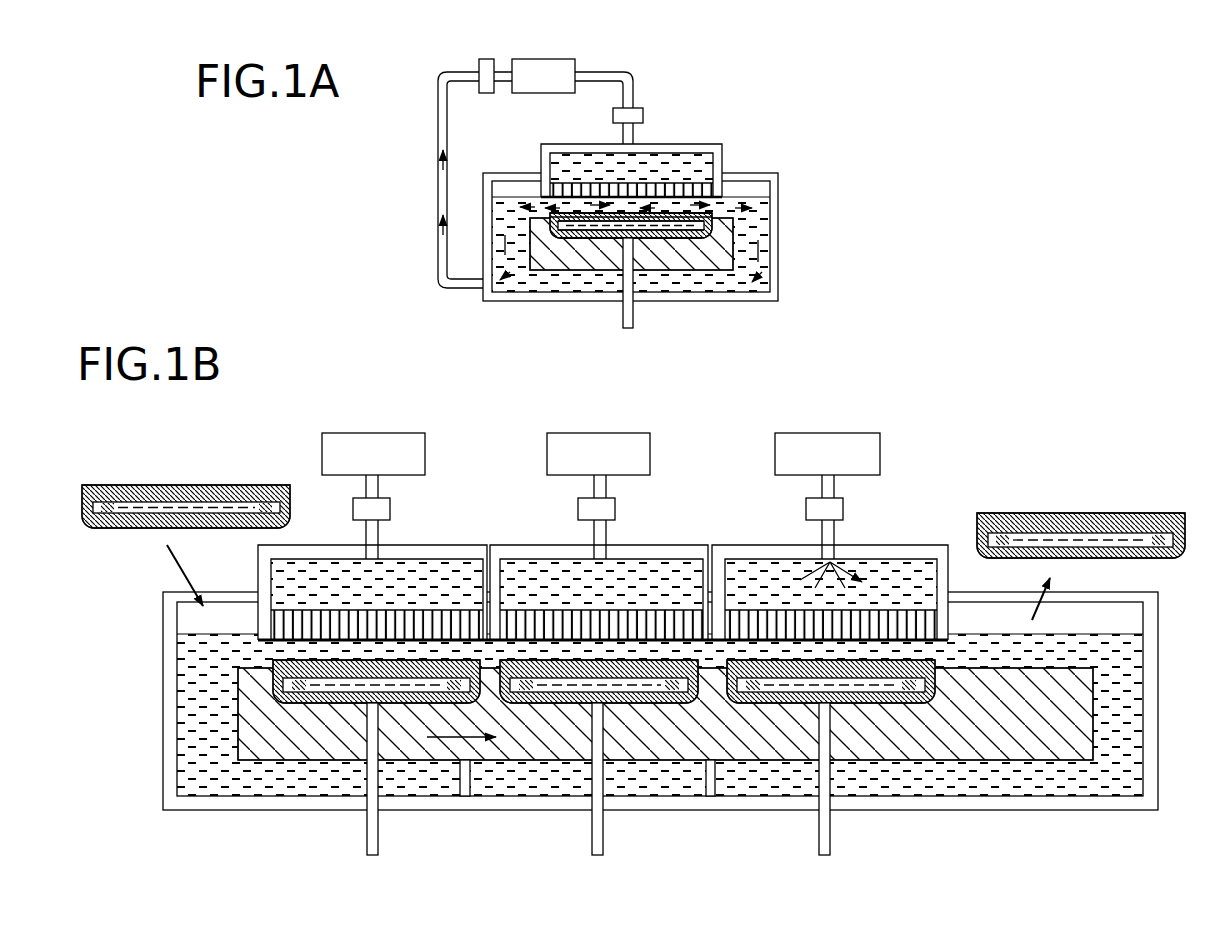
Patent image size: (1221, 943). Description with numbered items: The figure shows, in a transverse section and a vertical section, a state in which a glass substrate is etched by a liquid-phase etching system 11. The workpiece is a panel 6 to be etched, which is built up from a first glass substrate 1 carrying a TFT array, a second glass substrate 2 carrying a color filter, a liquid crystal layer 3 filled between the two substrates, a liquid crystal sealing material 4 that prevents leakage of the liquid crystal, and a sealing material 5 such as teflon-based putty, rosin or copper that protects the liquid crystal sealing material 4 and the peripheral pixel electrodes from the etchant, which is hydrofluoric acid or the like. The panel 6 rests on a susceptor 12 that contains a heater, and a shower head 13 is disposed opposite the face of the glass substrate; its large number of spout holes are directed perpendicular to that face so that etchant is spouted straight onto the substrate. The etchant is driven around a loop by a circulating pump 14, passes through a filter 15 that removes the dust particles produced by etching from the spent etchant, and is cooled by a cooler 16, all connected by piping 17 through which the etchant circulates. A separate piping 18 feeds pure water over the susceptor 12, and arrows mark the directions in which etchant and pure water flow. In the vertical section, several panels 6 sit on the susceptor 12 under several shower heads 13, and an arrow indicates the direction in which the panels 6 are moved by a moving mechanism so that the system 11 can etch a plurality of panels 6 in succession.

In FIG. 1A, the first glass substrate 1 is at (638, 238).
In FIG. 1A, the second glass substrate 2 is at (654, 238).
In FIG. 1A, the liquid crystal layer 3 is at (672, 238).
In FIG. 1A, the liquid crystal sealing material 4 is at (690, 238).
In FIG. 1A, the sealing material 5 is at (702, 238).
In FIG. 1A, the panel to be etched 6 is at (649, 303).
In FIG. 1B, the panel to be etched 6 is at (204, 478).
In FIG. 1A, the liquid-phase etching system 11 is at (782, 178).
In FIG. 1A, the susceptor 12 is at (567, 262).
In FIG. 1B, the susceptor 12 is at (993, 757).
In FIG. 1A, the shower head 13 is at (718, 188).
In FIG. 1B, the shower head 13 is at (603, 592).
In FIG. 1A, the circulating pump 14 is at (553, 60).
In FIG. 1B, the circulating pump 14 is at (427, 455).
In FIG. 1A, the filter 15 is at (478, 60).
In FIG. 1A, the cooler 16 is at (643, 110).
In FIG. 1B, the cooler 16 is at (391, 510).
In FIG. 1A, the piping 17 is at (438, 128).
In FIG. 1A, the piping for feeding pure water 18 is at (625, 328).
In FIG. 1B, the piping for feeding pure water 18 is at (366, 847).